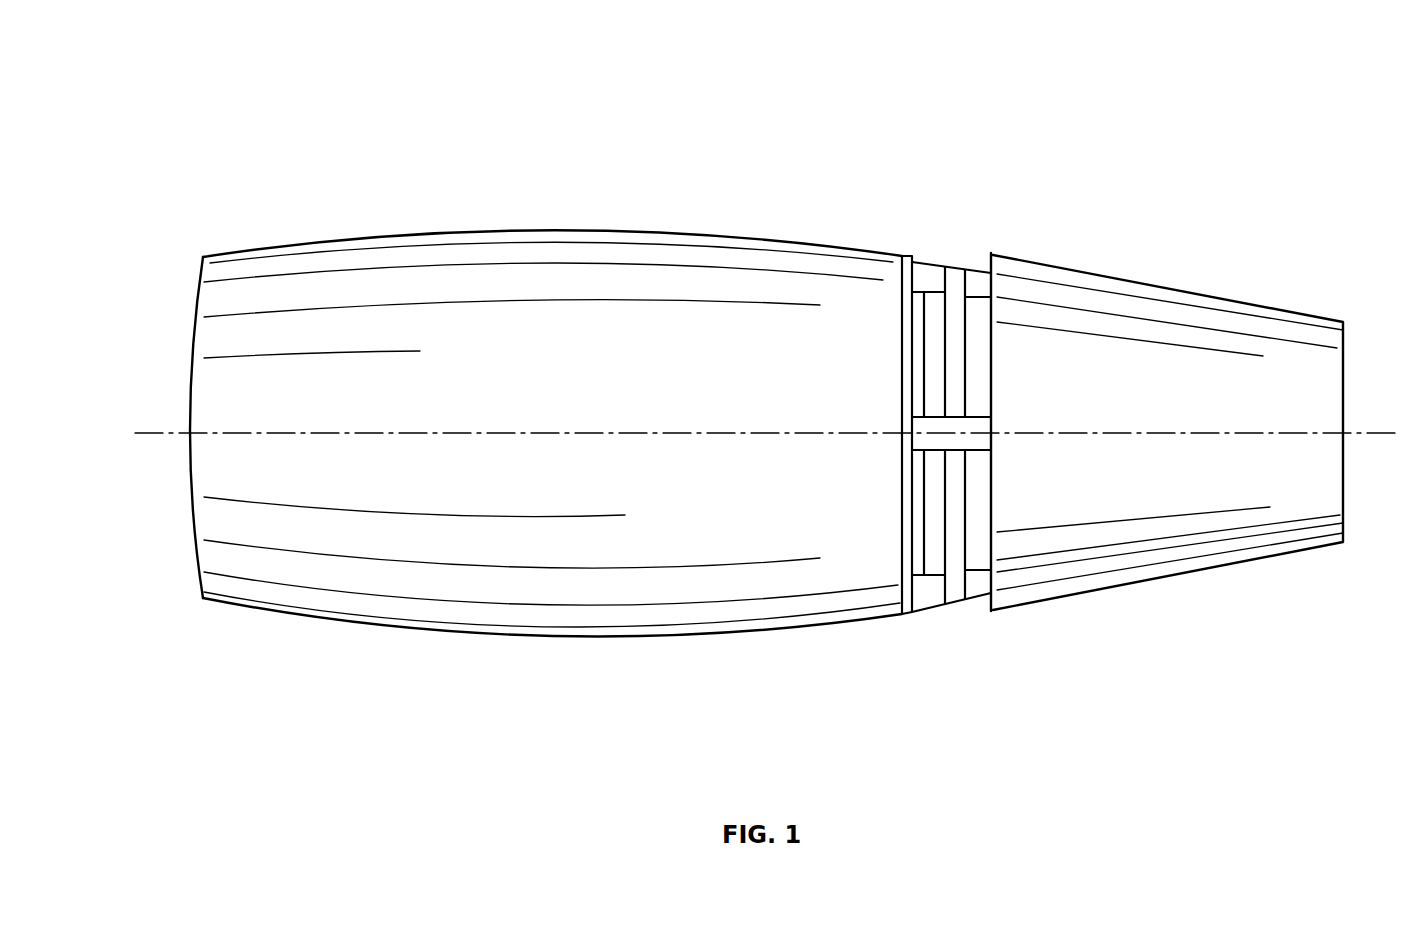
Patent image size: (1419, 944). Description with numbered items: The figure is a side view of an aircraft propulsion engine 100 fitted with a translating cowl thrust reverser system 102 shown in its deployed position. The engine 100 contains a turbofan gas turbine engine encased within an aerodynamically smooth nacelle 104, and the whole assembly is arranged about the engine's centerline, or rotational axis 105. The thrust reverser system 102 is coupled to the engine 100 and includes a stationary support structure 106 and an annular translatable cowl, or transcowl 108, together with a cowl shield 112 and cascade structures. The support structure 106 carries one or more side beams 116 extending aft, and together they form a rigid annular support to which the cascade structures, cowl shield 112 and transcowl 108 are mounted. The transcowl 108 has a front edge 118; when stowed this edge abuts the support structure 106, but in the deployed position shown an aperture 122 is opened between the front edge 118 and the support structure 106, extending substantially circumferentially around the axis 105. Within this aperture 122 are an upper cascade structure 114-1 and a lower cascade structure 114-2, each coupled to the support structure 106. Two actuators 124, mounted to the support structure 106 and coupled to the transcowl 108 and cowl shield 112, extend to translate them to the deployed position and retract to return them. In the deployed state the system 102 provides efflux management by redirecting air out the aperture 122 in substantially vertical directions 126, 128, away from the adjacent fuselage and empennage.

The aircraft propulsion engine 100 is at (330, 85).
The thrust reverser system 102 is at (1177, 224).
The nacelle 104 is at (536, 232).
The rotational axis 105 is at (147, 432).
The stationary support structure 106 is at (908, 257).
The transcowl 108 is at (1255, 305).
The cowl shield 112 is at (990, 606).
The upper cascade structure 114-1 is at (957, 343).
The lower cascade structure 114-2 is at (957, 497).
The side beams 116 is at (925, 423).
The front edge 118 is at (985, 254).
The aperture 122 is at (950, 236).
The actuators 124 is at (937, 262).
The substantially vertical direction 126 is at (952, 82).
The substantially vertical direction 128 is at (951, 702).